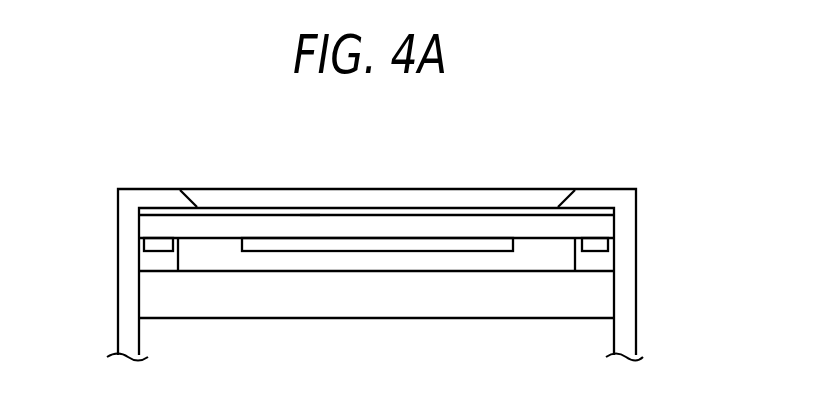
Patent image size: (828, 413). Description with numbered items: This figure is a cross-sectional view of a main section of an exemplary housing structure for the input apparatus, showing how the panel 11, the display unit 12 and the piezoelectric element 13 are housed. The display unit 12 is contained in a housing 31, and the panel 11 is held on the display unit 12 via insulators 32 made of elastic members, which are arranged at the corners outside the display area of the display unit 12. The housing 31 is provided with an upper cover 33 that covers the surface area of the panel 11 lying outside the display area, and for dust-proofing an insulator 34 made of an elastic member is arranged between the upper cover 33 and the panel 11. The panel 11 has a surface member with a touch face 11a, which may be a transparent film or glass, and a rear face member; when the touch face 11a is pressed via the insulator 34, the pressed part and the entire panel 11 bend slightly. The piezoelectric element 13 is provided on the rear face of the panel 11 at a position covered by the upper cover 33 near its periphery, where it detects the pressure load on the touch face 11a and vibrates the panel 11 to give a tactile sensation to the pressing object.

The panel 11 is at (243, 227).
The touch face 11a is at (297, 217).
The display unit 12 is at (297, 295).
The piezoelectric element 13 is at (395, 245).
The housing 31 is at (628, 322).
The insulator 32 is at (148, 263).
The upper cover 33 is at (590, 200).
The insulator 34 is at (475, 212).